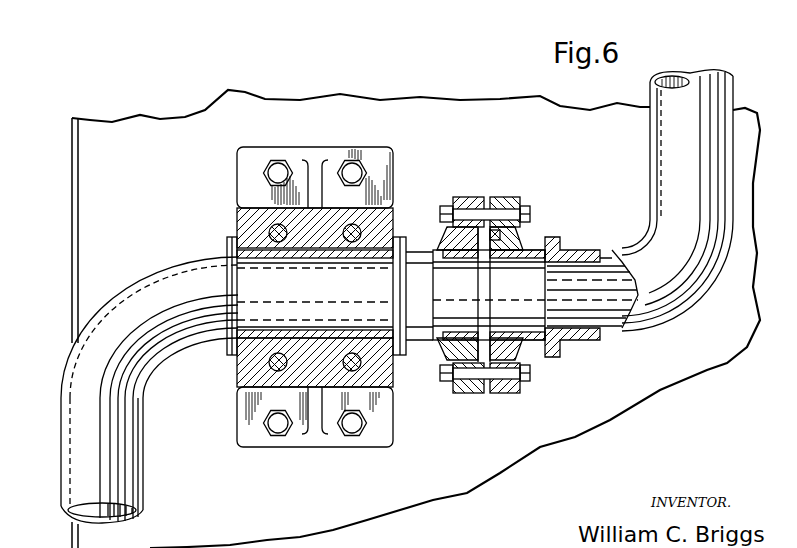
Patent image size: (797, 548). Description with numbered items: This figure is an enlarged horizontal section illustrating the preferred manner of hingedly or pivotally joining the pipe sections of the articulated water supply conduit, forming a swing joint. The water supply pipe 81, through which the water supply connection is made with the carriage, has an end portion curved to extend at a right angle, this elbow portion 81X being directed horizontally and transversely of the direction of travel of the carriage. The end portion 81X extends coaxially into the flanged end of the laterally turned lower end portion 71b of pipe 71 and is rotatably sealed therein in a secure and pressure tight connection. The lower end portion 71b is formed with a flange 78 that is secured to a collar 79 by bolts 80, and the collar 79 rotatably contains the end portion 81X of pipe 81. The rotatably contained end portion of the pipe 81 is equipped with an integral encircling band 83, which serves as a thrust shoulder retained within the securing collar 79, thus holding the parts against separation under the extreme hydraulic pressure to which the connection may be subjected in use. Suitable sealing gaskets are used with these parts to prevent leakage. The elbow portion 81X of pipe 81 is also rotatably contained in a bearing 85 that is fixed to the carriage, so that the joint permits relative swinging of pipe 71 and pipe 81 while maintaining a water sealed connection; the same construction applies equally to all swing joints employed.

The pipe 71 is at (668, 123).
The laterally turned lower end portion of pipe 71 71b is at (596, 336).
The flange 78 is at (507, 194).
The collar 79 is at (460, 198).
The bolts 80 is at (481, 210).
The water supply pipe 81 is at (85, 492).
The end portion of water supply pipe 81X is at (240, 371).
The encircling band 83 is at (487, 283).
The bearing 85 is at (330, 302).